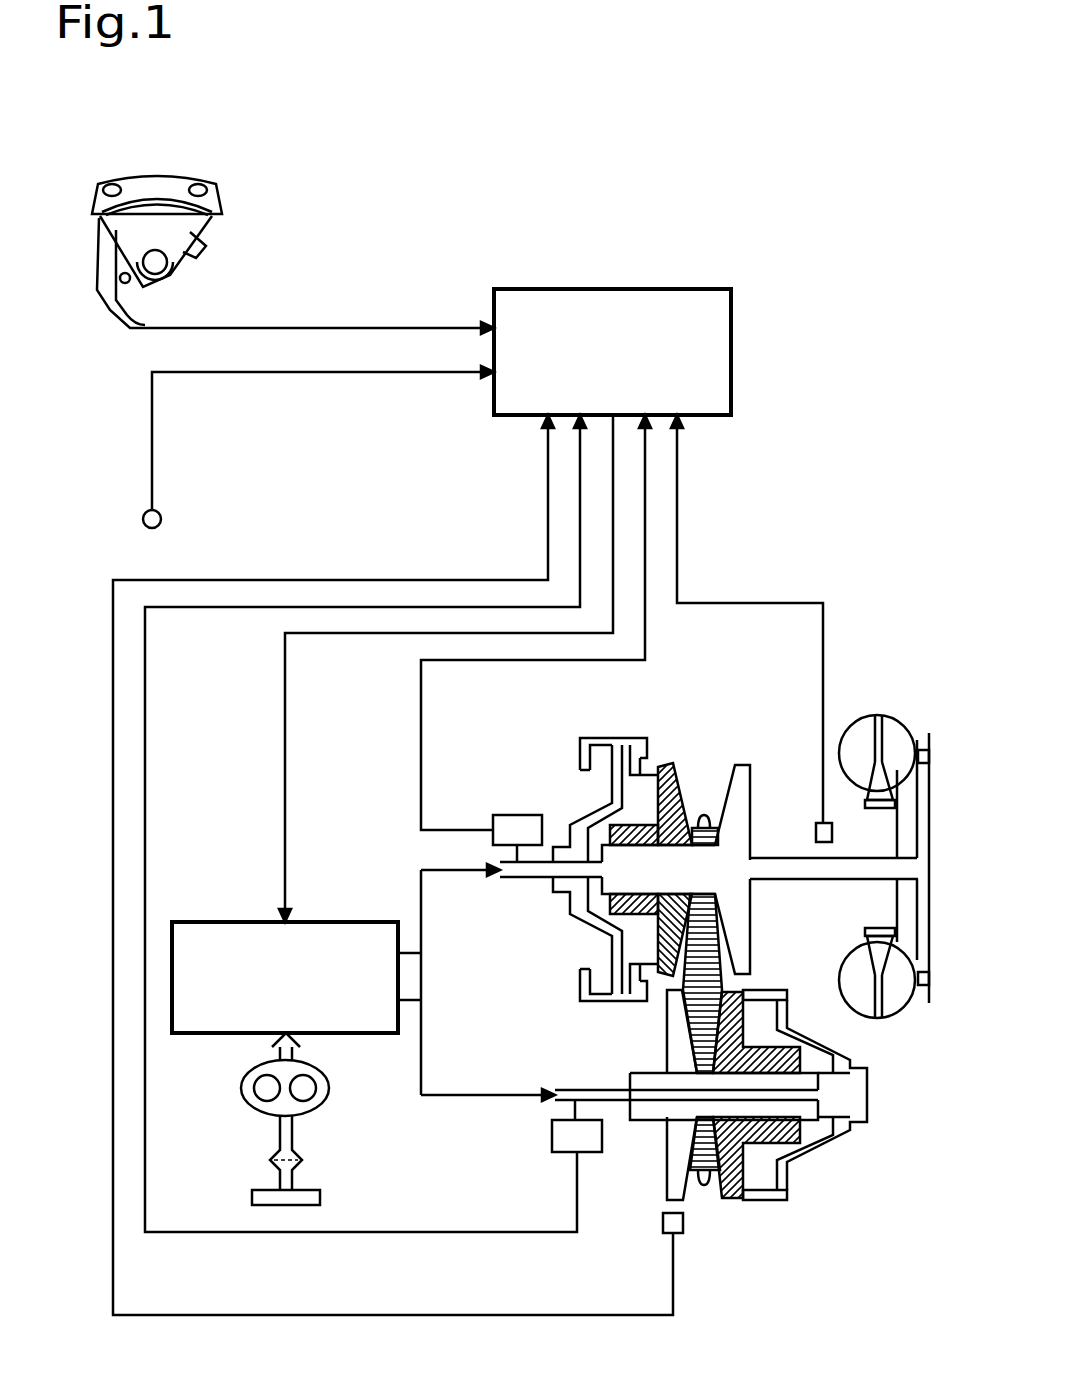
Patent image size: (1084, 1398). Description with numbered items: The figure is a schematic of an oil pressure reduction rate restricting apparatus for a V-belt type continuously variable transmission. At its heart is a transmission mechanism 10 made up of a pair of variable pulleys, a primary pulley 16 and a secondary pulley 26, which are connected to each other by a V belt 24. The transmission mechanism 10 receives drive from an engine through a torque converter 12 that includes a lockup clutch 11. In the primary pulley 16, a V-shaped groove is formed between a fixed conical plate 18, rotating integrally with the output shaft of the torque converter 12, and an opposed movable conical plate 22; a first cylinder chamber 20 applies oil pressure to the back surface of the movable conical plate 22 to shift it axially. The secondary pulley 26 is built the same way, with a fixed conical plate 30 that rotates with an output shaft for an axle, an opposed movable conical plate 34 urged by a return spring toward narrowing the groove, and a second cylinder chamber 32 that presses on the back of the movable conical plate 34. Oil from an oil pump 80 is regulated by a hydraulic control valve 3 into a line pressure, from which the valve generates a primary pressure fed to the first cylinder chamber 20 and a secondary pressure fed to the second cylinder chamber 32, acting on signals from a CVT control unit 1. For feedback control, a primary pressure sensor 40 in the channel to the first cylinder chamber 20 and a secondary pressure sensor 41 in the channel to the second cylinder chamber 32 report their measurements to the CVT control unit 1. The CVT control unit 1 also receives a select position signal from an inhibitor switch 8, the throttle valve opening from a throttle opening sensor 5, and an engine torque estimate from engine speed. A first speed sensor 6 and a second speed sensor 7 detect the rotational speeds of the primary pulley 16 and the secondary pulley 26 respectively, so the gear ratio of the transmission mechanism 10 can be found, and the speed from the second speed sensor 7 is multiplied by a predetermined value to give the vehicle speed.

The CVT control unit 1 is at (522, 289).
The hydraulic control valve 3 is at (232, 1035).
The throttle opening sensor 5 is at (143, 519).
The first speed sensor 6 is at (818, 830).
The second speed sensor 7 is at (683, 1236).
The inhibitor switch 8 is at (106, 186).
The transmission mechanism 10 is at (747, 1135).
The lockup clutch 11 is at (912, 920).
The torque converter 12 is at (880, 715).
The primary pulley 16 is at (648, 839).
The fixed conical plate 18 is at (740, 766).
The first cylinder chamber 20 is at (640, 793).
The movable conical plate 22 is at (663, 772).
The V belt 24 is at (757, 953).
The secondary pulley 26 is at (747, 1135).
The fixed conical plate 30 is at (665, 1038).
The second cylinder chamber 32 is at (757, 1177).
The movable conical plate 34 is at (743, 1018).
The primary pressure sensor 40 is at (495, 818).
The secondary pressure sensor 41 is at (552, 1135).
The oil pump 80 is at (318, 1108).